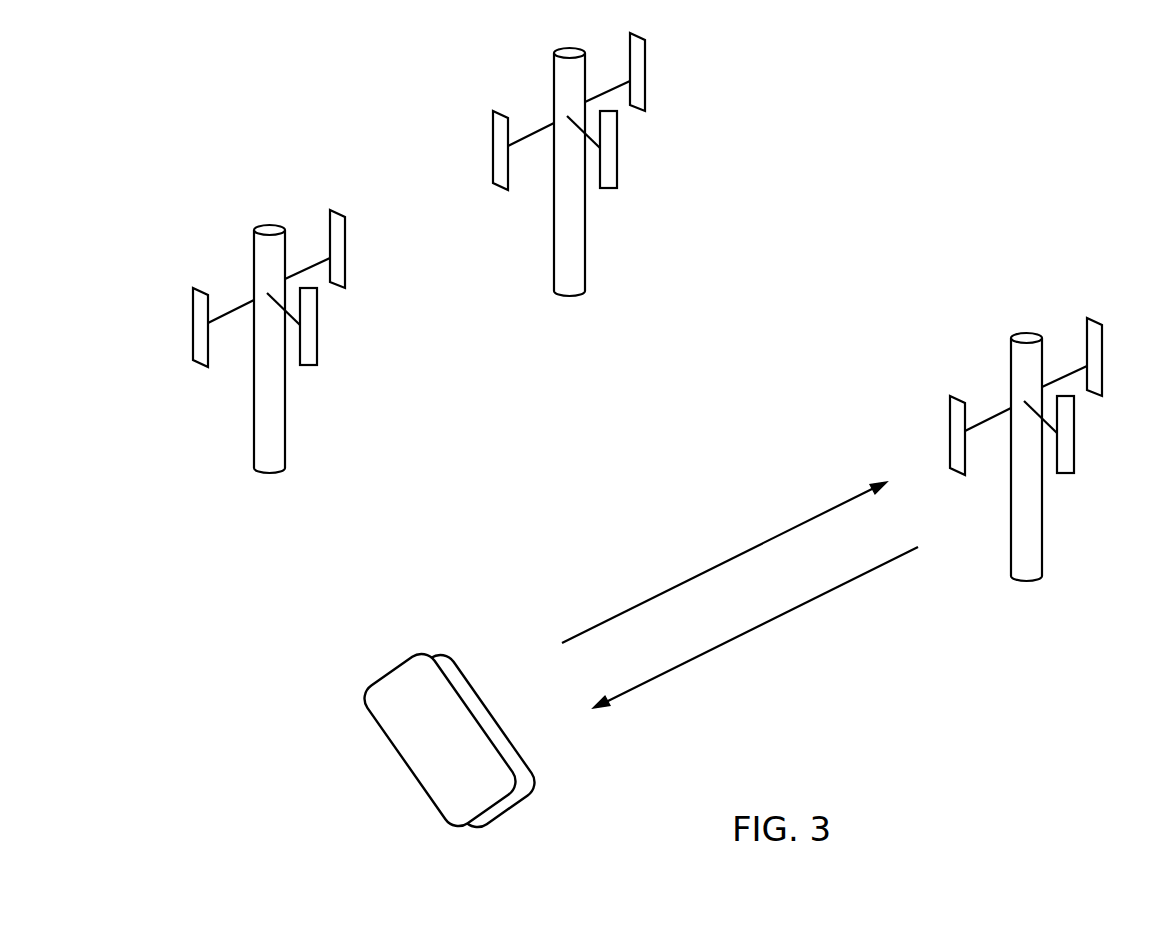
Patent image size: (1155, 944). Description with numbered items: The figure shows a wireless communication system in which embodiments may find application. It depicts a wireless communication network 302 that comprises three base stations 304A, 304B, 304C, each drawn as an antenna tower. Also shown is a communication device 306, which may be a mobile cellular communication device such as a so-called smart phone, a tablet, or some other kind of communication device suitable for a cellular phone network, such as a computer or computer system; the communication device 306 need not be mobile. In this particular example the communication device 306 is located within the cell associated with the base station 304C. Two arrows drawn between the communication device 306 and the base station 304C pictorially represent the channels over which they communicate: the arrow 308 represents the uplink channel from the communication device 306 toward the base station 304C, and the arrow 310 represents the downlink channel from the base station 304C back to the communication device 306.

The wireless communication network 302 is at (1071, 104).
The base station 304A is at (262, 225).
The base station 304B is at (565, 48).
The base station 304C is at (1022, 333).
The communication device 306 is at (430, 674).
The uplink channel 308 is at (715, 567).
The downlink channel 310 is at (735, 638).